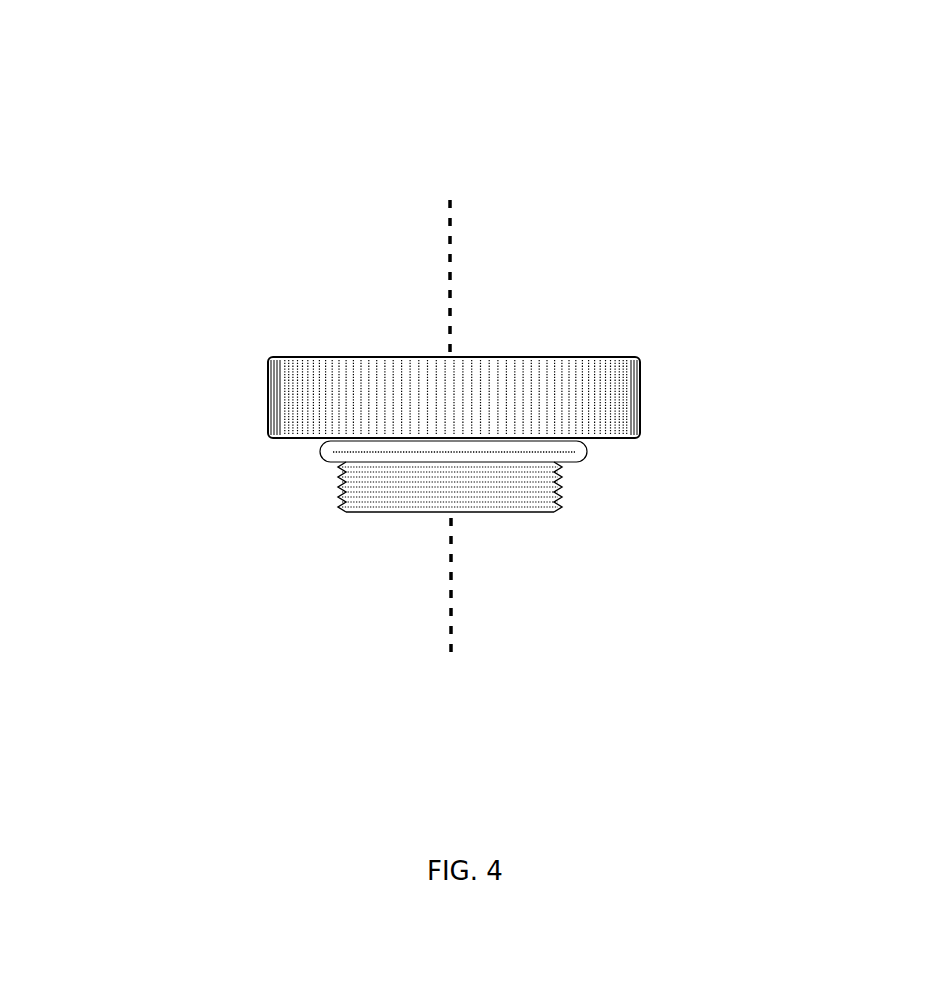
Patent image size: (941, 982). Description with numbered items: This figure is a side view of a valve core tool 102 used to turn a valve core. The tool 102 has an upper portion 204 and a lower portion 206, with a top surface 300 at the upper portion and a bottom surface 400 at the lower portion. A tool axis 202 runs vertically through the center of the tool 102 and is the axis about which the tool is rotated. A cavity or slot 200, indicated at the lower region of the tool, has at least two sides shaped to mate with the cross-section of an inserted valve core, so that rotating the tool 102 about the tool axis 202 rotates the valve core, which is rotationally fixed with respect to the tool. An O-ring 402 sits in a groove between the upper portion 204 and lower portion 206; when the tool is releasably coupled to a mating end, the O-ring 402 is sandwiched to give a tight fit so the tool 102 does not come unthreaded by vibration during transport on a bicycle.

The valve core tool 102 is at (802, 156).
The cavity or slot 200 is at (472, 537).
The tool axis 202 is at (452, 258).
The upper portion 204 is at (267, 397).
The lower portion 206 is at (343, 490).
The top surface 300 is at (363, 357).
The bottom surface 400 is at (385, 511).
The O-ring 402 is at (585, 458).